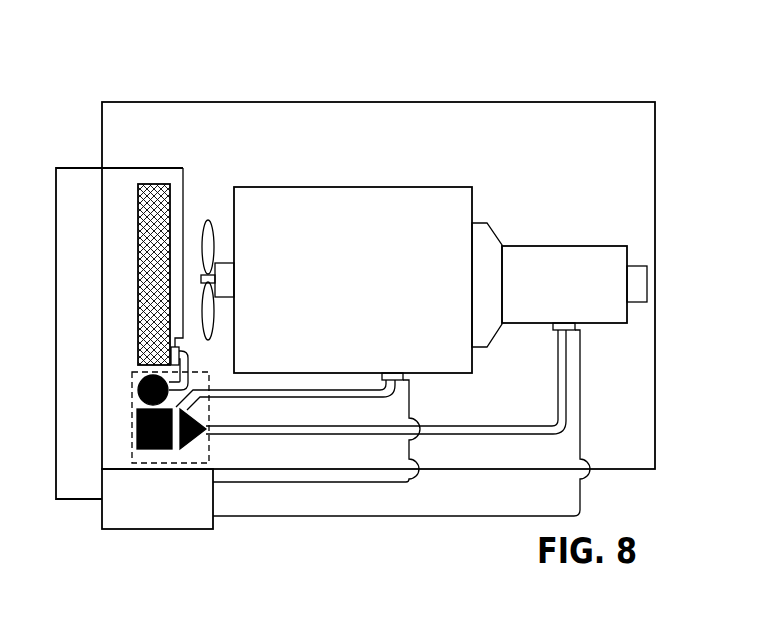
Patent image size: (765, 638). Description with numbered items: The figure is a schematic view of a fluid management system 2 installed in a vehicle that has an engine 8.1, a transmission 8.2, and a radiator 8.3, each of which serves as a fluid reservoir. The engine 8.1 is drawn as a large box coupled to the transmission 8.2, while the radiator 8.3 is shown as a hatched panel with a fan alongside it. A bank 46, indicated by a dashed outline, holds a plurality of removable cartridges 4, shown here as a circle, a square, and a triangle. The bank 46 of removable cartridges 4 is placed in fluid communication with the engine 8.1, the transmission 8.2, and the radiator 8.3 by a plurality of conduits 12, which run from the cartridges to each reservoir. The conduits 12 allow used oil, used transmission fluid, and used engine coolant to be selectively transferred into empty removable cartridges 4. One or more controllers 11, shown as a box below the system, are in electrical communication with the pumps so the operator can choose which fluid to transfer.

The fluid management system 2 is at (189, 82).
The engine 8.1 is at (353, 187).
The transmission 8.2 is at (566, 246).
The radiator 8.3 is at (138, 228).
The removable cartridges 4 is at (138, 388).
The conduits 12 is at (233, 426).
The bank 46 is at (124, 431).
The controllers 11 is at (122, 530).